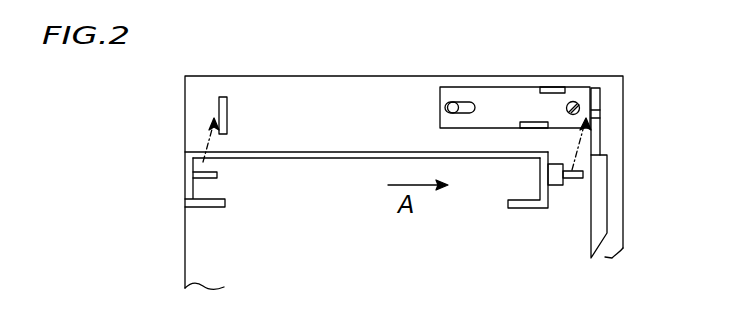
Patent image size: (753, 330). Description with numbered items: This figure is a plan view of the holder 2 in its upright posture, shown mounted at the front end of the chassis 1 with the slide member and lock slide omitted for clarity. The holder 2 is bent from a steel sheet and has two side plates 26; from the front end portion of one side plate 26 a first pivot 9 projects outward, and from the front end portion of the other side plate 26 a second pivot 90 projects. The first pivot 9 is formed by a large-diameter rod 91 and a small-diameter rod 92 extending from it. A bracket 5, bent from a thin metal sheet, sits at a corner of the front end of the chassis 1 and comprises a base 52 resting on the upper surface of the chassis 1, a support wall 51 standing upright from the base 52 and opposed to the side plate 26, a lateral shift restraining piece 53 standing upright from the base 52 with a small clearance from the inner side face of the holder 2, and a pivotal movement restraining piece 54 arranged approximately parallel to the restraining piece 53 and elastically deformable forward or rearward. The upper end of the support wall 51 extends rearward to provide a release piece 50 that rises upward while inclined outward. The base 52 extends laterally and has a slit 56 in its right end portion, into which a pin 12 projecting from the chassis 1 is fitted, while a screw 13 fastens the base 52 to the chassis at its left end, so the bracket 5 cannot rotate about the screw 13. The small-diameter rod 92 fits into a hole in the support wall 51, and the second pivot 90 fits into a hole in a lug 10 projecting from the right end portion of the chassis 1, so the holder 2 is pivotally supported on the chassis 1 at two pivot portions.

The chassis 1 is at (318, 86).
The holder 2 is at (332, 158).
The bracket 5 is at (656, 173).
The first pivot 9 is at (540, 245).
The lug 10 is at (228, 106).
The pin 12 is at (455, 103).
The screw 13 is at (592, 77).
The side plate 26 is at (190, 182).
The release piece 50 is at (597, 201).
The support wall 51 is at (592, 102).
The base 52 is at (506, 93).
The lateral shift restraining piece 53 is at (545, 91).
The pivotal movement restraining piece 54 is at (574, 102).
The slit 56 is at (470, 101).
The second pivot 90 is at (218, 175).
The large-diameter rod 91 is at (557, 186).
The small-diameter rod 92 is at (578, 180).